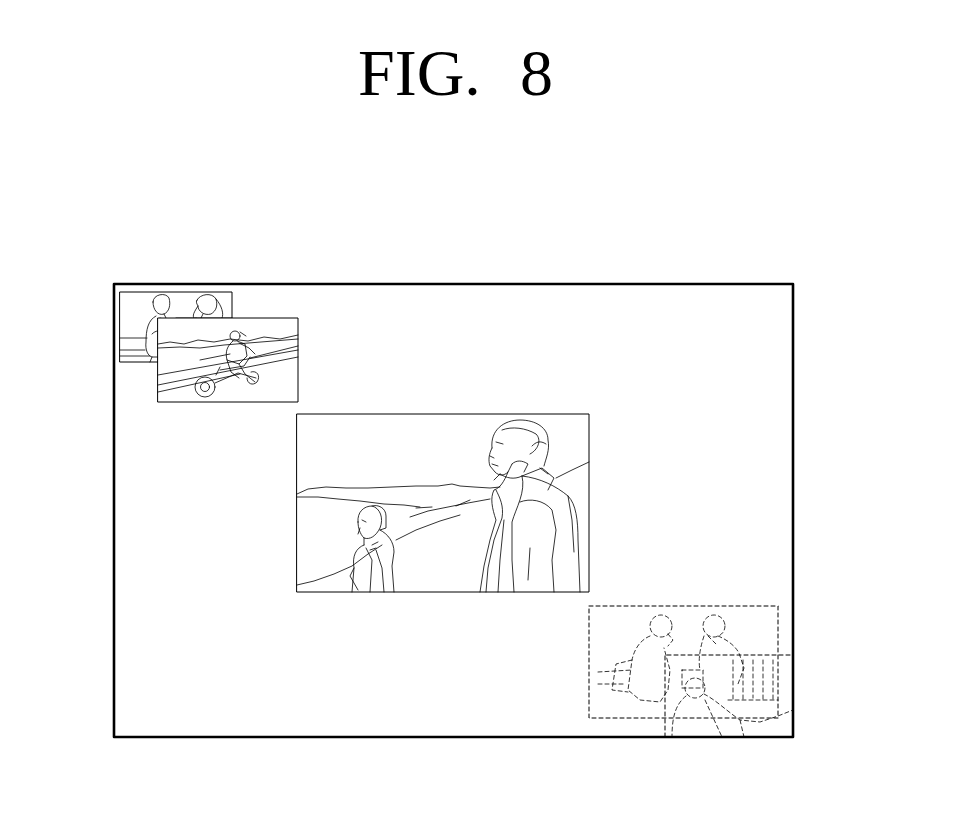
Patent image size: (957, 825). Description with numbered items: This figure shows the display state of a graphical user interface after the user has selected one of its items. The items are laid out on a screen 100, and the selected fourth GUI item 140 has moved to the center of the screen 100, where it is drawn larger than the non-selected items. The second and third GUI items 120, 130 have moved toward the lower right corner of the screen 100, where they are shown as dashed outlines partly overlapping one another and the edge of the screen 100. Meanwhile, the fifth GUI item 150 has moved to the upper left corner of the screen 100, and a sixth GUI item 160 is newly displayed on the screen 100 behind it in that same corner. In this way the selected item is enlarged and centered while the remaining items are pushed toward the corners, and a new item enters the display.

The screen 100 is at (670, 284).
The second GUI item 120 is at (790, 655).
The third GUI item 130 is at (778, 606).
The fourth GUI item 140 is at (589, 414).
The fifth GUI item 150 is at (298, 318).
The sixth GUI item 160 is at (114, 284).